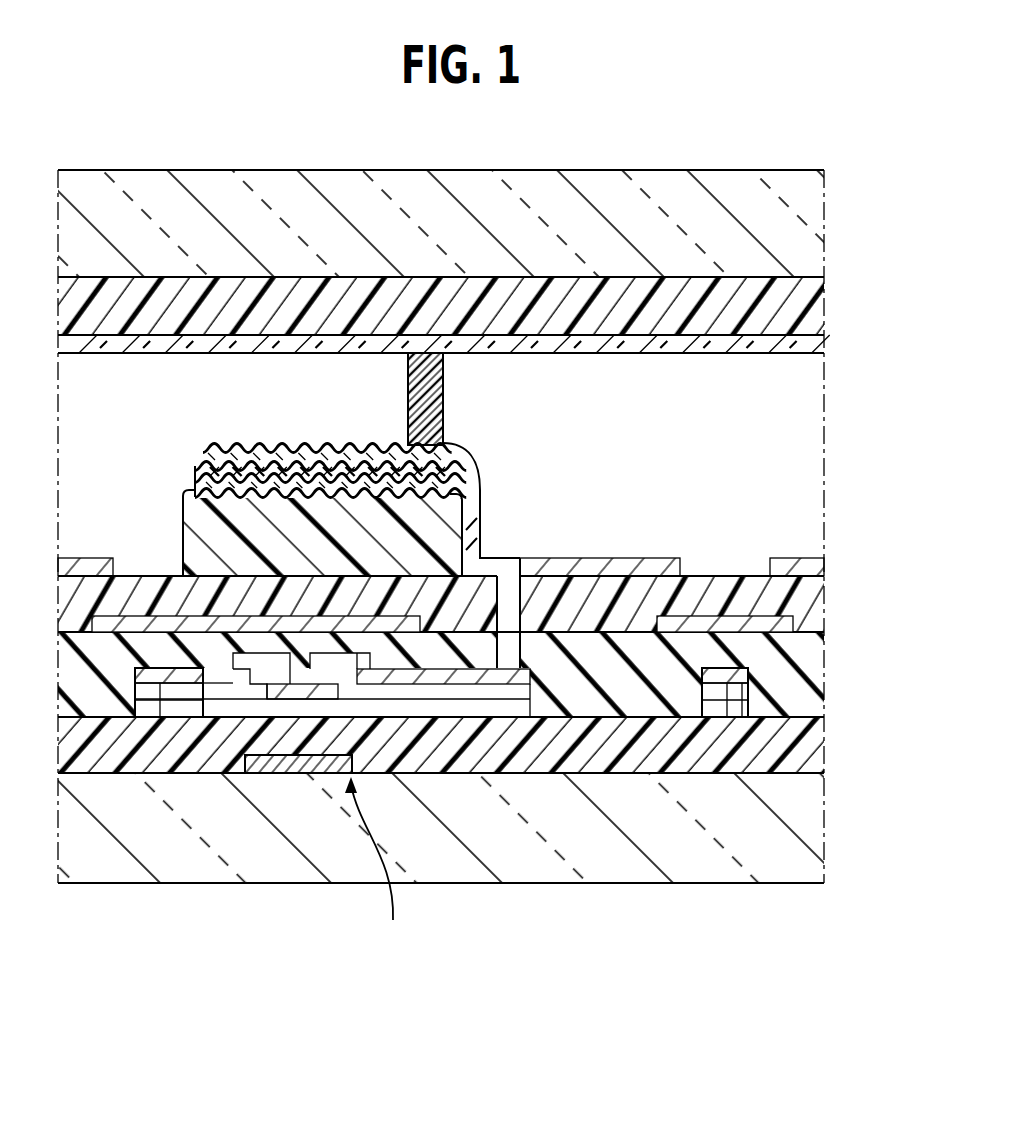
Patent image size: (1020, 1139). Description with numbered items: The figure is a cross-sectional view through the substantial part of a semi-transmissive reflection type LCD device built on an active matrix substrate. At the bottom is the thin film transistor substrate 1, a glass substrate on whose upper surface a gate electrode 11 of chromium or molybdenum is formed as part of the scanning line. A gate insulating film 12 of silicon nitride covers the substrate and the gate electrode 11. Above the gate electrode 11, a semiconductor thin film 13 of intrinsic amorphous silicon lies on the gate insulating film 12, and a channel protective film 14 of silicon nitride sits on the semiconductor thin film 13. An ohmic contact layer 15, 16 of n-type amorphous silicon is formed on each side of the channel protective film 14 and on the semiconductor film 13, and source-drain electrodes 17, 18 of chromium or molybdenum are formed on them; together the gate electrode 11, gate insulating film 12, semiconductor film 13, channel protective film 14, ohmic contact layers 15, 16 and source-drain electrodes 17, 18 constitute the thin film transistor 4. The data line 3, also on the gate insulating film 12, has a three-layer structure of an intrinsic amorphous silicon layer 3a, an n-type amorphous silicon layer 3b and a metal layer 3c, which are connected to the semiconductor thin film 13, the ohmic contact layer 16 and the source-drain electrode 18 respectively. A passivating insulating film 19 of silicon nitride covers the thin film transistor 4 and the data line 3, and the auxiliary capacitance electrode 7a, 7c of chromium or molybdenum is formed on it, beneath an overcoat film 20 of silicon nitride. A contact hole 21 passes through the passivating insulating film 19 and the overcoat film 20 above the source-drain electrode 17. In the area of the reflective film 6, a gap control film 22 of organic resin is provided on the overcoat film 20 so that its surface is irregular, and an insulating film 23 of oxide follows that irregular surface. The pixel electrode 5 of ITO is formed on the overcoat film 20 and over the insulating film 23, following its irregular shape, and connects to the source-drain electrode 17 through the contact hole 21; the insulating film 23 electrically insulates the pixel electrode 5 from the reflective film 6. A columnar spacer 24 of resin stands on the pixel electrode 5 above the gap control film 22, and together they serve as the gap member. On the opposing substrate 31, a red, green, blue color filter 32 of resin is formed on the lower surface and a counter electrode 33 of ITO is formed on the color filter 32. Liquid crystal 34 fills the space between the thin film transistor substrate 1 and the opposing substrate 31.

The thin film transistor substrate 1 is at (808, 830).
The data line 3 is at (764, 944).
The intrinsic amorphous silicon layer 3a is at (715, 705).
The n-type amorphous silicon layer 3b is at (727, 700).
The metal layer 3c is at (740, 690).
The thin film transistor 4 is at (372, 870).
The pixel electrode 5 is at (797, 565).
The reflective film 6 is at (262, 456).
The auxiliary capacitance electrode 7a is at (737, 620).
The auxiliary capacitance electrode 7c is at (157, 625).
The gate electrode 11 is at (330, 783).
The gate insulating film 12 is at (808, 746).
The semiconductor thin film 13 is at (390, 690).
The channel protective film 14 is at (300, 690).
The ohmic contact layer 15 is at (437, 688).
The ohmic contact layer 16 is at (222, 700).
The source-drain electrode 17 is at (498, 676).
The source-drain electrode 18 is at (212, 705).
The passivating insulating film 19 is at (806, 690).
The overcoat film 20 is at (806, 602).
The contact hole 21 is at (508, 582).
The gap control film 22 is at (197, 513).
The insulating film 23 is at (312, 468).
The columnar spacer 24 is at (443, 388).
The opposing substrate 31 is at (808, 205).
The color filter 32 is at (803, 304).
The counter electrode 33 is at (806, 345).
The liquid crystal 34 is at (808, 427).